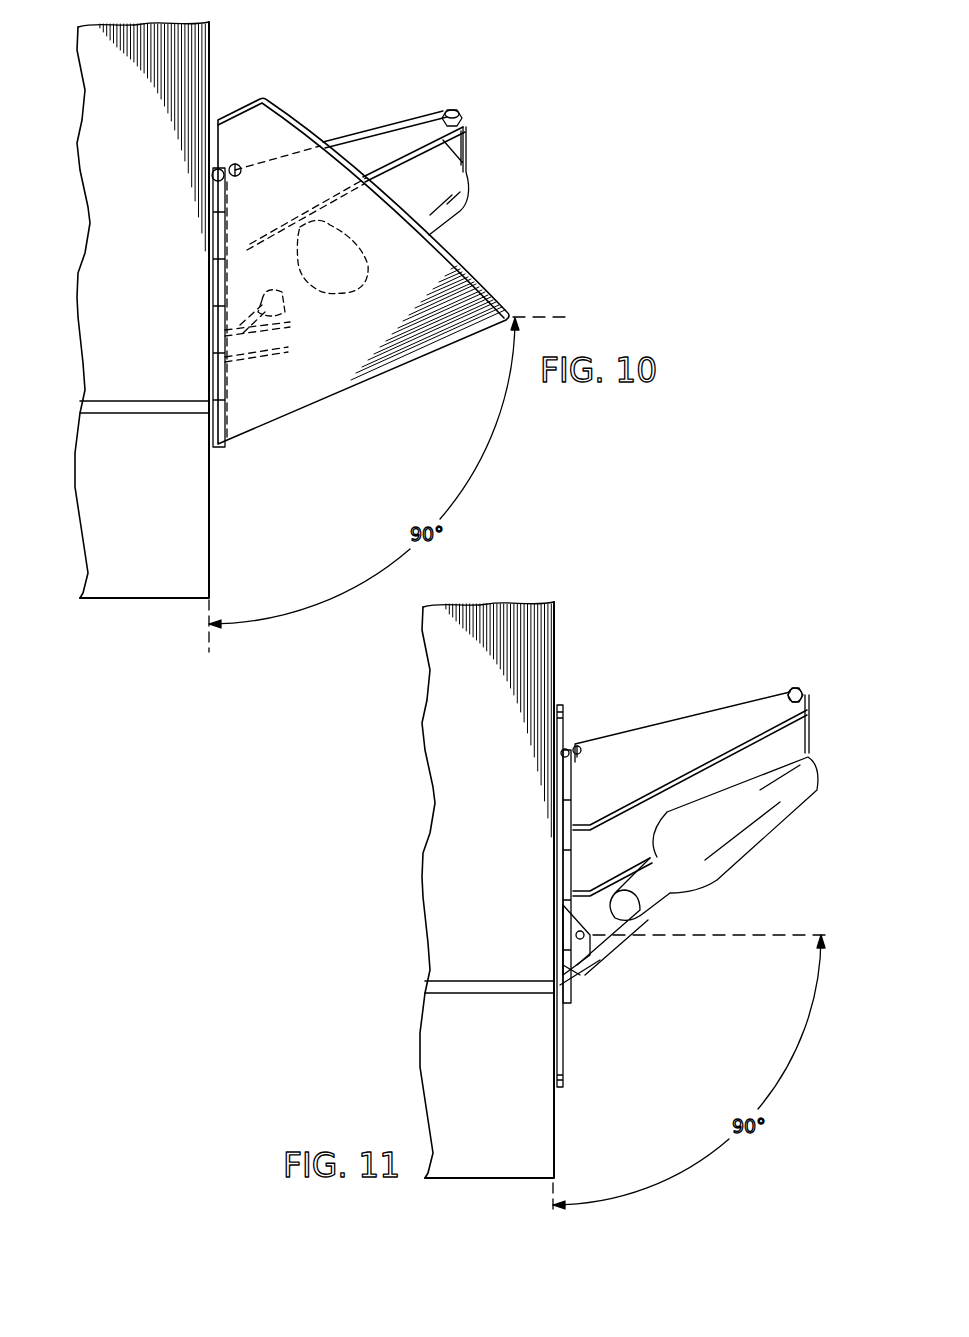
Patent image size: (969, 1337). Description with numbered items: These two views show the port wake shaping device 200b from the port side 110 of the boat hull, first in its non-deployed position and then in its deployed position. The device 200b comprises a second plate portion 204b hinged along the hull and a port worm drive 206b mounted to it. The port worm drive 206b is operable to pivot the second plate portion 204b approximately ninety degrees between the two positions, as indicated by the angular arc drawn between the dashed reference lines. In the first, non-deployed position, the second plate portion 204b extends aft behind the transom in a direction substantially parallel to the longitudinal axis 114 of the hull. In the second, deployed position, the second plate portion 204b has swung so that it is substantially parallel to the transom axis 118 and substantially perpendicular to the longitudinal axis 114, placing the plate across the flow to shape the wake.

In FIG. 10, the port side 110 is at (105, 297).
In FIG. 11, the port side 110 is at (450, 877).
In FIG. 10, the longitudinal axis 114 is at (563, 316).
In FIG. 11, the longitudinal axis 114 is at (748, 936).
In FIG. 10, the transom axis 118 is at (207, 628).
In FIG. 11, the transom axis 118 is at (552, 1192).
In FIG. 10, the port wake shaping device 200b is at (432, 274).
In FIG. 11, the port wake shaping device 200b is at (687, 834).
In FIG. 10, the second plate portion 204b is at (313, 397).
In FIG. 11, the second plate portion 204b is at (567, 1043).
In FIG. 10, the port worm drive 206b is at (458, 219).
In FIG. 11, the port worm drive 206b is at (768, 833).